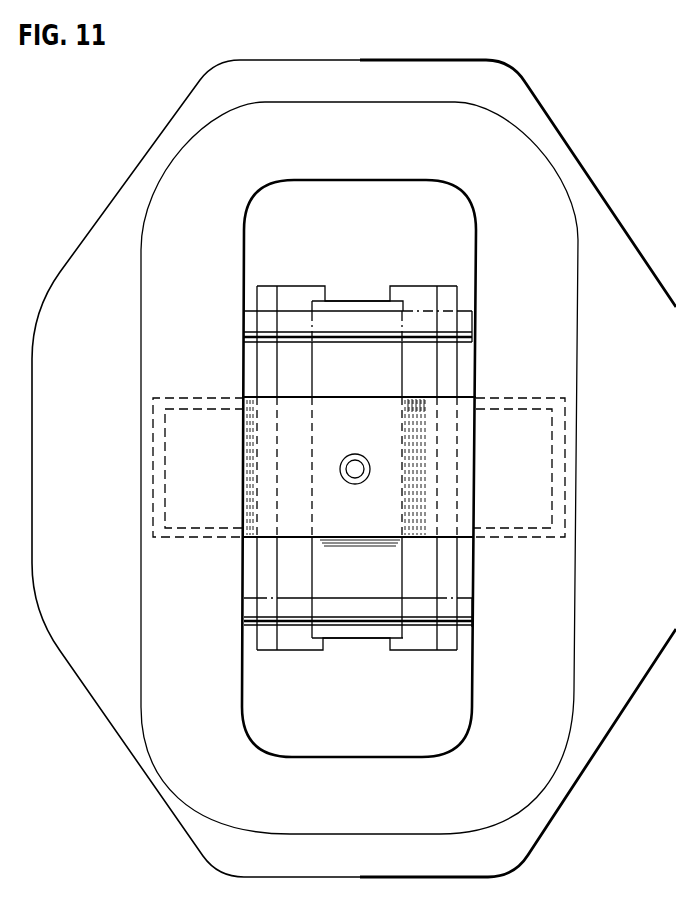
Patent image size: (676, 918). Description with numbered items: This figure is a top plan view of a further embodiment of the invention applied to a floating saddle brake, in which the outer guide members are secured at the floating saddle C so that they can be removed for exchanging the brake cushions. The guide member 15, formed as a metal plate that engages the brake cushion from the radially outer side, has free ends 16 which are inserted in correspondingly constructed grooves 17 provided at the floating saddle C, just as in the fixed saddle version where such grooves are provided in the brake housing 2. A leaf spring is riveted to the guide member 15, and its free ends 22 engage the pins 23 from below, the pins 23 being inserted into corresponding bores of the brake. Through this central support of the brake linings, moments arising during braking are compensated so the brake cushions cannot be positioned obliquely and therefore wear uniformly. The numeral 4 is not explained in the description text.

The brake housing 2 is at (633, 278).
The floating saddle C is at (553, 201).
The guide bars 4 is at (296, 286).
The guide member 15 is at (353, 408).
The free ends 16 is at (201, 510).
The grooves 17 is at (222, 398).
The free ends 22 is at (349, 301).
The pins 23 is at (365, 340).